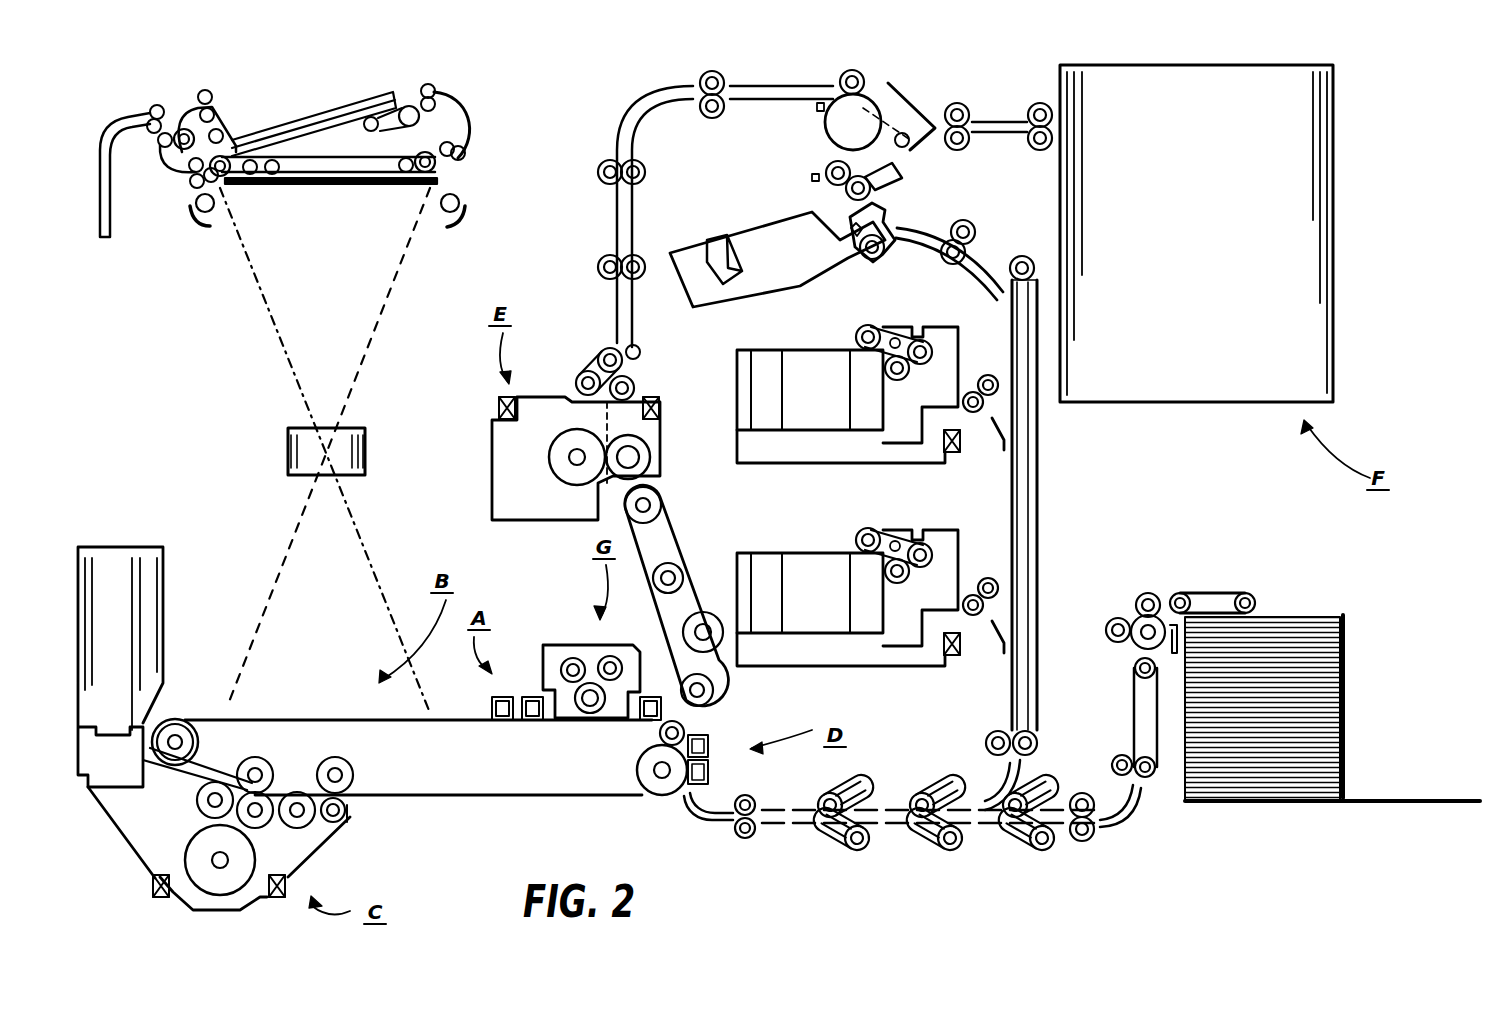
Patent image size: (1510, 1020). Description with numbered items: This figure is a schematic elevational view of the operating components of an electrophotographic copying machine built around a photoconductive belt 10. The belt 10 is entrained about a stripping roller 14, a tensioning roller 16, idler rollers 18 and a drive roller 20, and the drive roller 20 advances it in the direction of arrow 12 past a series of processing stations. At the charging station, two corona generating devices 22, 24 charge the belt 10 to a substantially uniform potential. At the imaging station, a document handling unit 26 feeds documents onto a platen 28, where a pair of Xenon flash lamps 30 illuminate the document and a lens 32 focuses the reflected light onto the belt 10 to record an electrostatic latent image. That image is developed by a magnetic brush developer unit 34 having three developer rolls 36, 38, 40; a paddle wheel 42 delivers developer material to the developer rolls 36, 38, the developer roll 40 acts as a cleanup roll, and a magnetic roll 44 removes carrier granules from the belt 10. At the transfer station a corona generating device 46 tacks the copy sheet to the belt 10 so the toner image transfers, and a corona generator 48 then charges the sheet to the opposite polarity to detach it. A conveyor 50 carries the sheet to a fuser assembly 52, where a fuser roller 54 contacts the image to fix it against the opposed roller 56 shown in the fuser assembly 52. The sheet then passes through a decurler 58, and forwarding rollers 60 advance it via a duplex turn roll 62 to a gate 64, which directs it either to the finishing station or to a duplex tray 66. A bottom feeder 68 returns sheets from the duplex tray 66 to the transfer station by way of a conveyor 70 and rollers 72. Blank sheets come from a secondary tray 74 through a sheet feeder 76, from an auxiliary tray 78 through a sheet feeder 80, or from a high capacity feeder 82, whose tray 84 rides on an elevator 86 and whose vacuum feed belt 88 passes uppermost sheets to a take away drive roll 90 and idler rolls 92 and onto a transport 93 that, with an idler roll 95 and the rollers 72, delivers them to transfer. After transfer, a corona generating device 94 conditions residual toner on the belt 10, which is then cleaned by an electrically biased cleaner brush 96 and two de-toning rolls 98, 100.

The photoconductive belt 10 is at (470, 722).
The arrow 12 is at (522, 799).
The stripping roller 14 is at (658, 730).
The tensioning roller 16 is at (186, 737).
The idler rollers 18 is at (328, 762).
The drive roller 20 is at (648, 778).
The corona generating device 22 is at (528, 697).
The corona generating device 24 is at (490, 706).
The document handling unit 26 is at (494, 128).
The platen 28 is at (370, 185).
The Xenon flash lamps 30 is at (213, 203).
The lens 32 is at (360, 447).
The magnetic brush developer unit 34 is at (346, 853).
The developer roll 36 is at (188, 785).
The developer roll 38 is at (215, 830).
The developer roll 40 is at (276, 848).
The paddle wheel 42 is at (150, 884).
The magnetic roll 44 is at (358, 822).
The corona generating device 46 is at (710, 782).
The corona generator 48 is at (710, 740).
The conveyor 50 is at (720, 672).
The fuser assembly 52 is at (687, 410).
The fuser roller 54 is at (560, 462).
The roller 56 is at (640, 458).
The decurler 58 is at (598, 370).
The forwarding rollers 60 is at (602, 170).
The duplex turn roll 62 is at (890, 137).
The gate 64 is at (905, 110).
The duplex tray 66 is at (762, 272).
The bottom feeder 68 is at (866, 262).
The conveyor 70 is at (1040, 492).
The rollers 72 is at (738, 828).
The secondary tray 74 is at (852, 455).
The sheet feeder 76 is at (893, 332).
The auxiliary tray 78 is at (908, 640).
The sheet feeder 80 is at (890, 535).
The high capacity feeder 82 is at (1370, 592).
The tray 84 is at (1292, 775).
The elevator 86 is at (1305, 803).
The vacuum feed belt 88 is at (1215, 593).
The take away drive roll 90 is at (1146, 640).
The idler rolls 92 is at (1115, 622).
The transport 93 is at (1133, 710).
The corona generating device 94 is at (662, 706).
The idler roll 95 is at (1125, 775).
The cleaner brush 96 is at (594, 690).
The de-toning roll 98 is at (612, 658).
The de-toning roll 100 is at (570, 662).